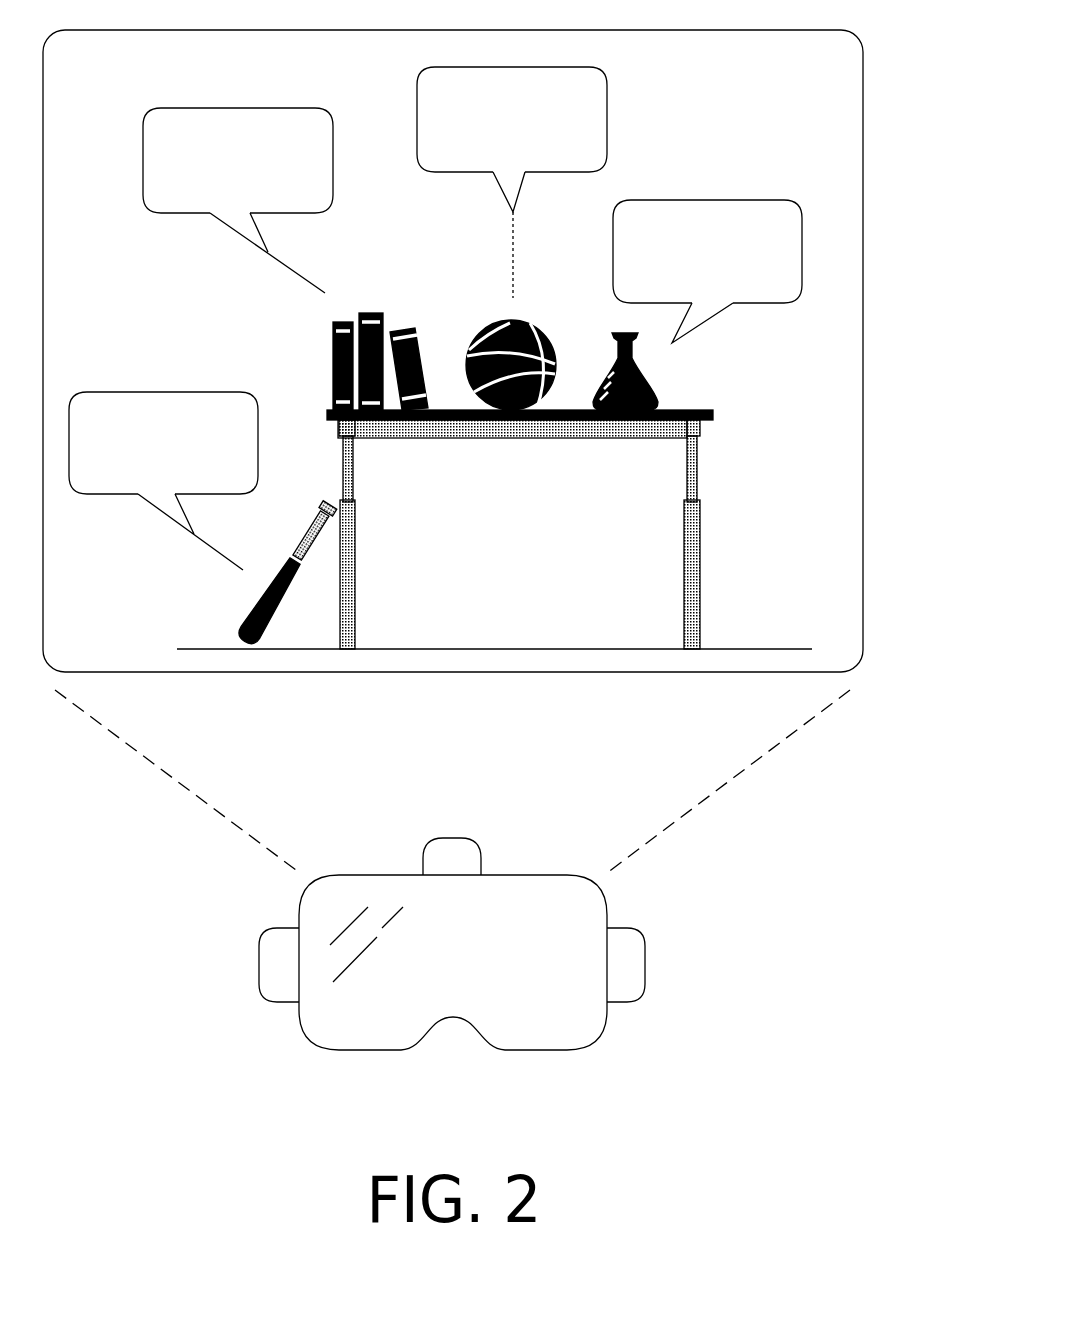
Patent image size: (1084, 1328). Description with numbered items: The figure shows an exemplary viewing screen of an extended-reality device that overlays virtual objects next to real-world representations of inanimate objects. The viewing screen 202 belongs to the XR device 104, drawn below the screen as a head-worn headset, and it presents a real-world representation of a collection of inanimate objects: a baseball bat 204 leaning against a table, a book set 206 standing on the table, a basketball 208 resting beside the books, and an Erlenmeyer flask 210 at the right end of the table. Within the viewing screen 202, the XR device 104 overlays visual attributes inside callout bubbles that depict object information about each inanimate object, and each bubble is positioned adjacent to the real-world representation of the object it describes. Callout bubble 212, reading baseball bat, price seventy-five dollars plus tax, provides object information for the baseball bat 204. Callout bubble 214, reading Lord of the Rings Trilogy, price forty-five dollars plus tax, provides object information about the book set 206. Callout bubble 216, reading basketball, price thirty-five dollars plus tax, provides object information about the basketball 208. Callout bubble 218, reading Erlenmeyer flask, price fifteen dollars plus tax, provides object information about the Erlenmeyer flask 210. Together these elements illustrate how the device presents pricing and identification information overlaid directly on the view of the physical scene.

The XR device 104 is at (645, 965).
The viewing screen 202 is at (863, 120).
The baseball bat 204 is at (240, 625).
The book set 206 is at (333, 370).
The basketball 208 is at (483, 327).
The Erlenmeyer flask 210 is at (655, 397).
The callout bubble 212 is at (177, 392).
The callout bubble 214 is at (143, 154).
The callout bubble 216 is at (607, 90).
The callout bubble 218 is at (728, 200).